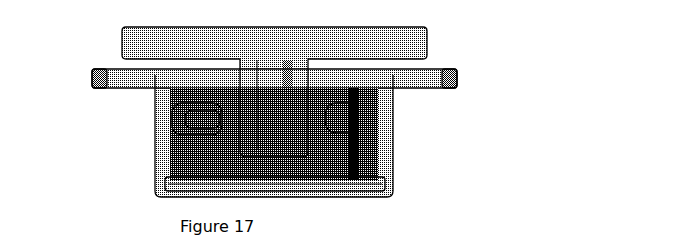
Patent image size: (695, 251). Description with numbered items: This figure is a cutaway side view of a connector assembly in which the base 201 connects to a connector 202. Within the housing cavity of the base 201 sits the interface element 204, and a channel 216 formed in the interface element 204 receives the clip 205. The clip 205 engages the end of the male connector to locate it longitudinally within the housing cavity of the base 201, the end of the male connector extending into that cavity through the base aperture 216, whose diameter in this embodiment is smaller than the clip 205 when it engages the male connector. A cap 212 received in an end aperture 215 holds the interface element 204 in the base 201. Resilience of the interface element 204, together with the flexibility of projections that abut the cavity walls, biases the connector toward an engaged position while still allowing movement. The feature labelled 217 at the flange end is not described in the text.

The connector 202 is at (408, 48).
The base 201 is at (418, 84).
The flange end segment 217 is at (420, 85).
The base aperture 216 is at (238, 81).
The clip 205 is at (210, 119).
The interface element 204 is at (320, 160).
The cap 212 is at (200, 185).
The end aperture 215 is at (392, 195).